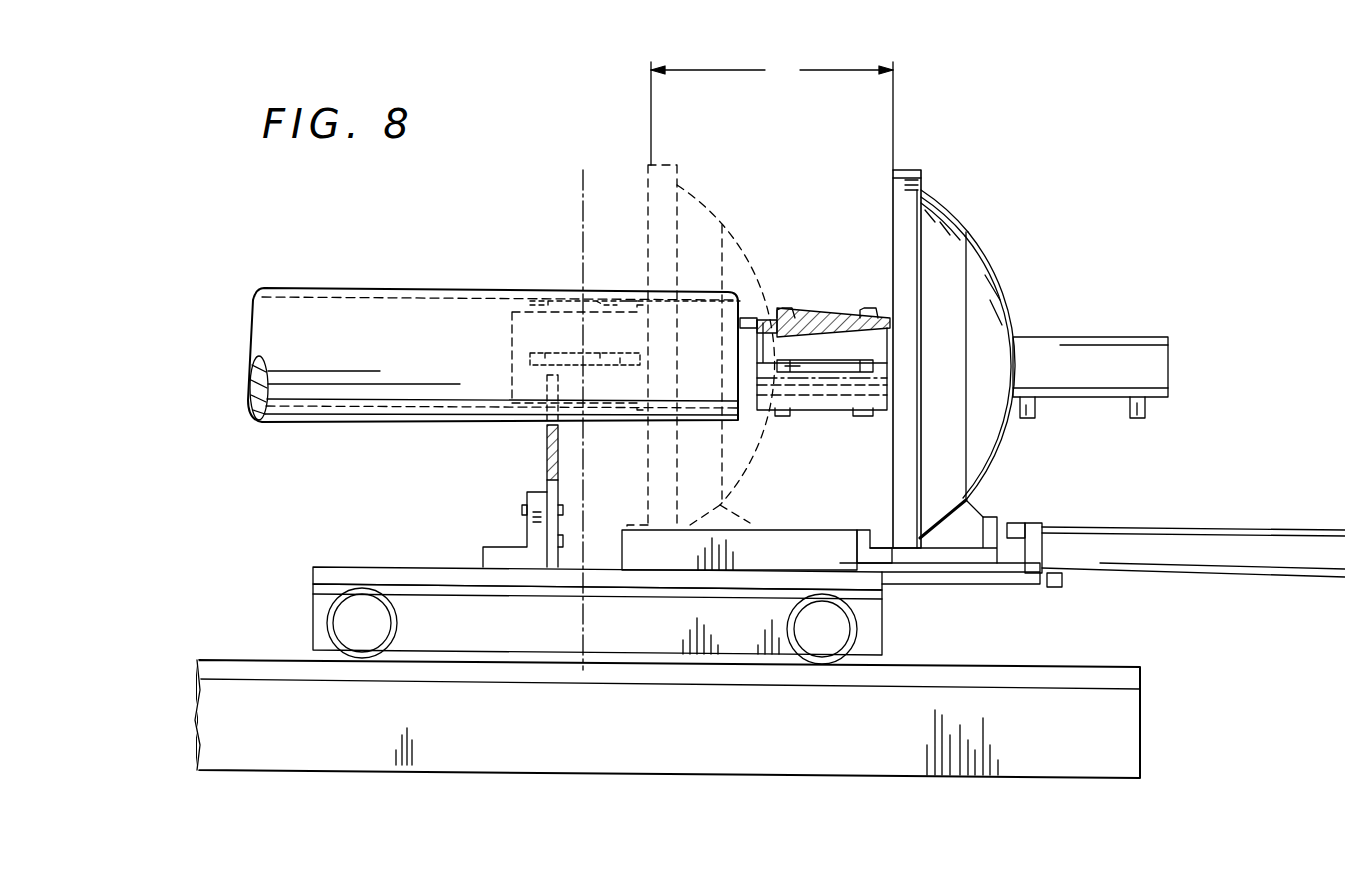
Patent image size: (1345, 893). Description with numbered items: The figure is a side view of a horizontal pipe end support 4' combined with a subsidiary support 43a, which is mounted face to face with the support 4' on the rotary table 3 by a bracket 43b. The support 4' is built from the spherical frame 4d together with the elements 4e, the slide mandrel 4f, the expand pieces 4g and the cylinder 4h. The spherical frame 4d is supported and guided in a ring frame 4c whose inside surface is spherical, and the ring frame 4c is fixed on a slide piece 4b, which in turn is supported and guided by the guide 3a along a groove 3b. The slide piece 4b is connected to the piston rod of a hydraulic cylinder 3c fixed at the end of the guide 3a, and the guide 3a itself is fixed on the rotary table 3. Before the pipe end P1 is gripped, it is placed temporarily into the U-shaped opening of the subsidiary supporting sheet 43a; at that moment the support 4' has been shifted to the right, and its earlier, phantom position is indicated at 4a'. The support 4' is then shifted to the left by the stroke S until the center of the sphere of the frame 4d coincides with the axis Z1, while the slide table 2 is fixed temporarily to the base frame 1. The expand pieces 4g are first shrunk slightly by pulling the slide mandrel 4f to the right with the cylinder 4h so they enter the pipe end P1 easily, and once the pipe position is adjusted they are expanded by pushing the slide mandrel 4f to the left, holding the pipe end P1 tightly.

The base frame 1 is at (1128, 752).
The slide table 2 is at (866, 640).
The rotary table 3 is at (868, 582).
The guide 3a is at (752, 548).
The groove 3b is at (865, 545).
The hydraulic cylinder 3c is at (1183, 540).
The support 4' is at (950, 66).
The phantom housing 4a' is at (701, 316).
The slide piece 4b is at (905, 175).
The ring frame 4c is at (943, 208).
The spherical frame 4d is at (990, 278).
The support element 4e is at (513, 322).
The slide mandrel 4f is at (822, 340).
The expand pieces 4g is at (541, 303).
The cylinder 4h is at (1090, 343).
The subsidiary support 43a is at (546, 455).
The bracket 43b is at (497, 556).
The pipe end P1 is at (370, 300).
The axis Z1 is at (583, 207).
The stroke S is at (772, 115).